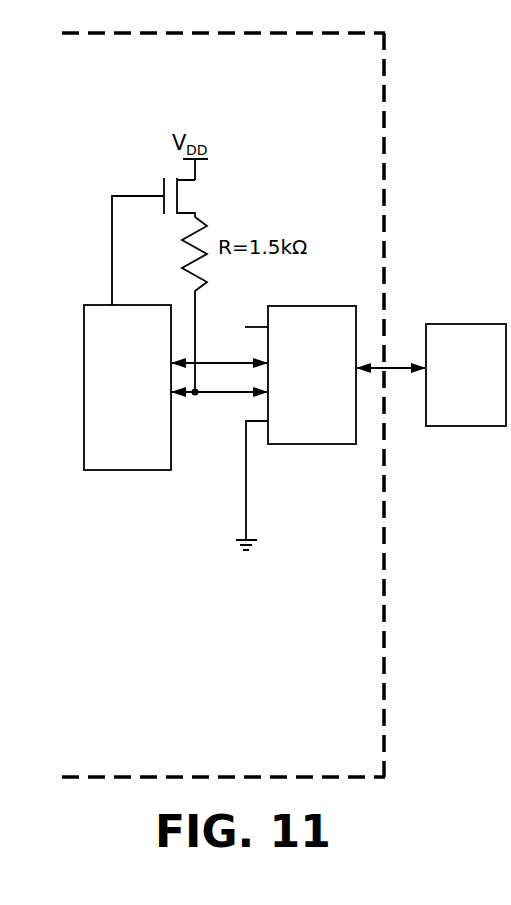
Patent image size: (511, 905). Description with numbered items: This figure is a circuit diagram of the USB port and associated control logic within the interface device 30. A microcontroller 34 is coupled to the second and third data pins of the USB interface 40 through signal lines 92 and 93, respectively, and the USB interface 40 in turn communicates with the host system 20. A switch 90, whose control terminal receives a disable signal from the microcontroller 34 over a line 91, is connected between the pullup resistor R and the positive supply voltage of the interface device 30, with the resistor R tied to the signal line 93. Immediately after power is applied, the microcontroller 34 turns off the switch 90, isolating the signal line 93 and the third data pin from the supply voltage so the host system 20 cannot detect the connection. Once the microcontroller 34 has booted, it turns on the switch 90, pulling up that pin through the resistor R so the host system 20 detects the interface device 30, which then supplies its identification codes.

The interface device 30 is at (294, 34).
The switch 90 is at (186, 197).
The line 91 is at (113, 259).
The microcontroller 34 is at (121, 304).
The USB interface 40 is at (318, 305).
The signal line 92 is at (203, 363).
The signal line 93 is at (203, 392).
The host system 20 is at (431, 375).